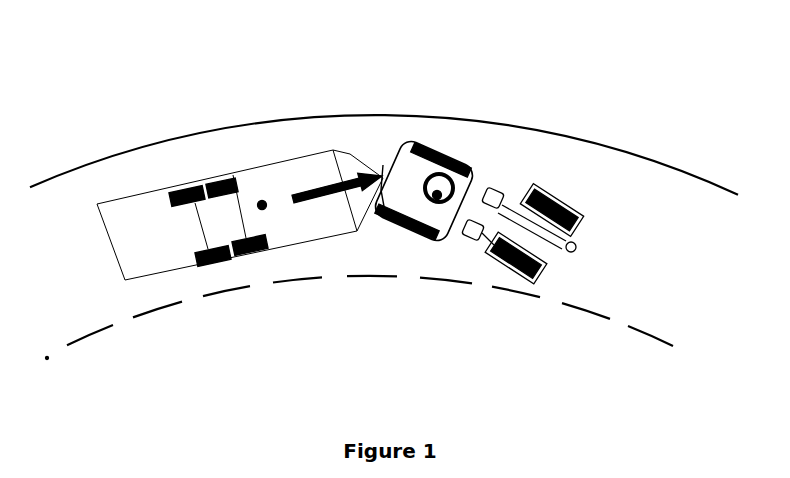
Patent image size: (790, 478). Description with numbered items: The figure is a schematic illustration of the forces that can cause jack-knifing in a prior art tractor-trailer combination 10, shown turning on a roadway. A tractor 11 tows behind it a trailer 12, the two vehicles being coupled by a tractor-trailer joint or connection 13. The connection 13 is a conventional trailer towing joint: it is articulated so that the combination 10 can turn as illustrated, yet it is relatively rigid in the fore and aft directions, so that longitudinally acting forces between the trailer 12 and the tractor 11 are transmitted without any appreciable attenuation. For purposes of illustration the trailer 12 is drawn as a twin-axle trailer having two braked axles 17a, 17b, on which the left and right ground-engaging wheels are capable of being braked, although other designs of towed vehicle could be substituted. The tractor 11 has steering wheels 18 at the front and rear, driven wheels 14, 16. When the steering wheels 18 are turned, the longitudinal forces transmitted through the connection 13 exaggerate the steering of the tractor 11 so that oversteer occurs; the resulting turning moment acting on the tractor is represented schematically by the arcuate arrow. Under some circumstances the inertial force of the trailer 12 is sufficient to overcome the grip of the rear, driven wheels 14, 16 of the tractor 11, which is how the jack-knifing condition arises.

The tractor-trailer combination 10 is at (477, 195).
The tractor 11 is at (496, 144).
The trailer 12 is at (147, 223).
The tractor-trailer joint or connection 13 is at (400, 180).
The rear driven wheel 14 is at (440, 148).
The rear driven wheel 16 is at (405, 222).
The braked axle 17a is at (228, 182).
The braked axle 17b is at (196, 198).
The steering wheels 18 is at (537, 277).